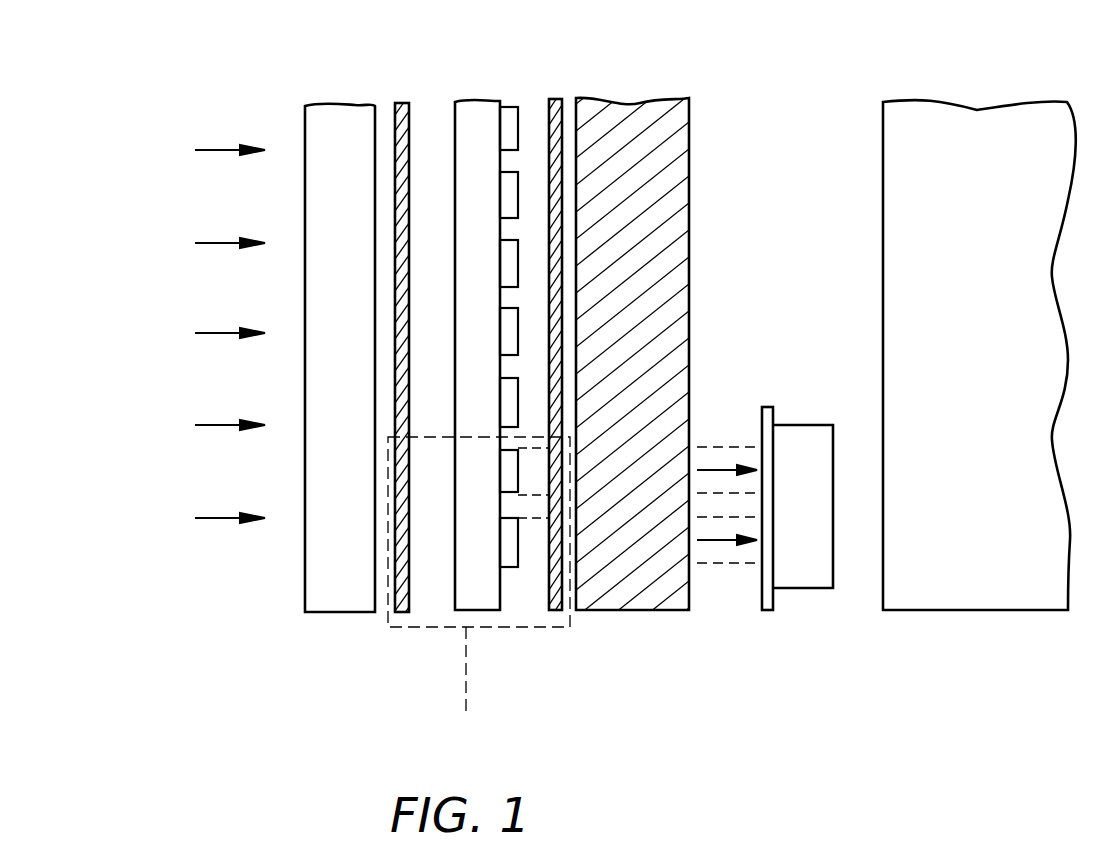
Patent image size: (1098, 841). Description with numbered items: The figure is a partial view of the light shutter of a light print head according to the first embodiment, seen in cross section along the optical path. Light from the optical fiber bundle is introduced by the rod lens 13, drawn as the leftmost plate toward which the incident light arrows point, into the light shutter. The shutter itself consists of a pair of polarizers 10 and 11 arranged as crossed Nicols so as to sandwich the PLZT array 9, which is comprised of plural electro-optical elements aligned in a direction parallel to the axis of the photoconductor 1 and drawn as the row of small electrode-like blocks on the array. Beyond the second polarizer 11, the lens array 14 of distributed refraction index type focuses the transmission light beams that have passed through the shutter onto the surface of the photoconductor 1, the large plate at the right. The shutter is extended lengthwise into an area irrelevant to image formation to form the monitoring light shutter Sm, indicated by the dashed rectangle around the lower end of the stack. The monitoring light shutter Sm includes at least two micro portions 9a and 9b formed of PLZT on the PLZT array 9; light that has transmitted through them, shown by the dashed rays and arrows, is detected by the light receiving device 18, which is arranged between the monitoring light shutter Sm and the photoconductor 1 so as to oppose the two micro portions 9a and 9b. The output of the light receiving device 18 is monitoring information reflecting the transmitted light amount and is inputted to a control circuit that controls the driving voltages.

The photoconductor 1 is at (1010, 575).
The PLZT array 9 is at (487, 407).
The micro portion 9a is at (522, 475).
The micro portion 9b is at (523, 566).
The polarizer 10 is at (392, 614).
The polarizer 11 is at (554, 98).
The rod lens 13 is at (326, 605).
The lens array 14 is at (691, 125).
The light receiving device 18 is at (800, 590).
The monitoring light shutter Sm is at (479, 589).